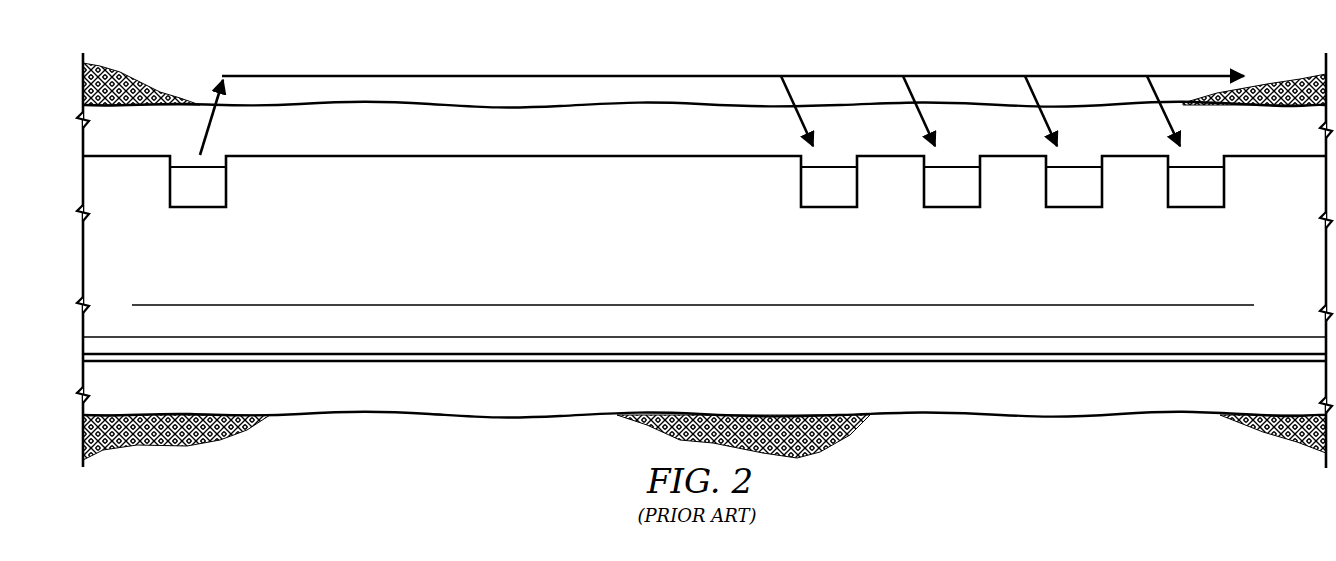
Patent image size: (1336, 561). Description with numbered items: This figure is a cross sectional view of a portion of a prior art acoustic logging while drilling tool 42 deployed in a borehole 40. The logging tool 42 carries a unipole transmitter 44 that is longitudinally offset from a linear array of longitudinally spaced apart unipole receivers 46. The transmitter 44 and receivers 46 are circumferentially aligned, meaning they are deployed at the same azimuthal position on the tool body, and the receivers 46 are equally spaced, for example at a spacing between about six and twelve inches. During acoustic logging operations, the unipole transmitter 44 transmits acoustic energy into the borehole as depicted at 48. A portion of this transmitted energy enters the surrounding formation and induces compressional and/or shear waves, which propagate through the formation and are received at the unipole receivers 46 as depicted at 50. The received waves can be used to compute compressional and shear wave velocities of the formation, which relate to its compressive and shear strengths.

The borehole 40 is at (419, 419).
The acoustic logging while drilling tool 42 is at (748, 363).
The unipole transmitter 44 is at (170, 190).
The unipole receivers 46 is at (801, 190).
The transmitted acoustic energy 48 is at (203, 139).
The received formation waves 50 is at (800, 120).